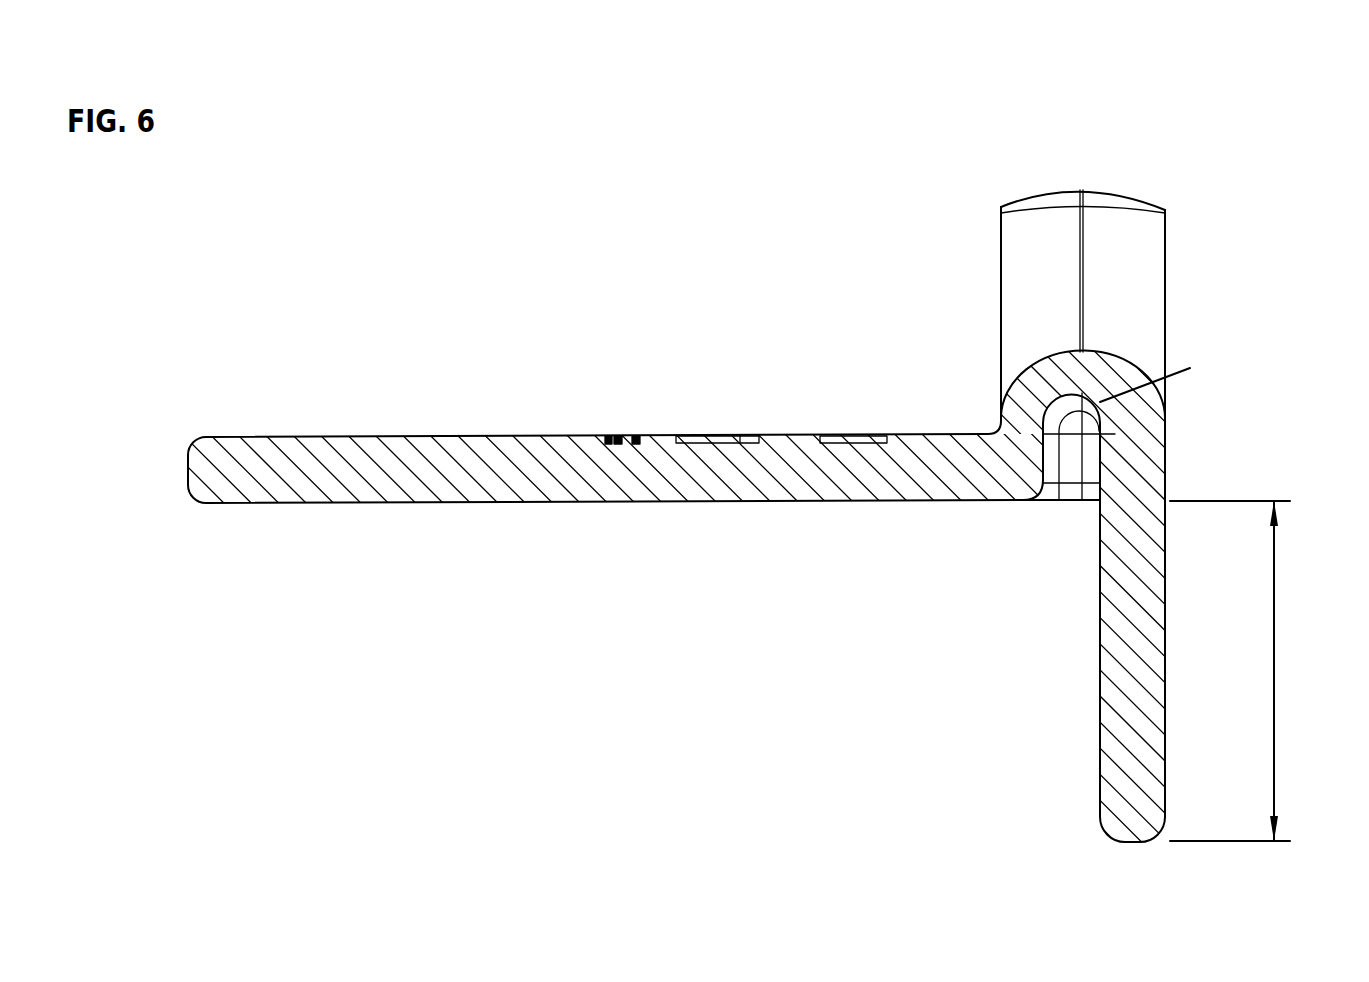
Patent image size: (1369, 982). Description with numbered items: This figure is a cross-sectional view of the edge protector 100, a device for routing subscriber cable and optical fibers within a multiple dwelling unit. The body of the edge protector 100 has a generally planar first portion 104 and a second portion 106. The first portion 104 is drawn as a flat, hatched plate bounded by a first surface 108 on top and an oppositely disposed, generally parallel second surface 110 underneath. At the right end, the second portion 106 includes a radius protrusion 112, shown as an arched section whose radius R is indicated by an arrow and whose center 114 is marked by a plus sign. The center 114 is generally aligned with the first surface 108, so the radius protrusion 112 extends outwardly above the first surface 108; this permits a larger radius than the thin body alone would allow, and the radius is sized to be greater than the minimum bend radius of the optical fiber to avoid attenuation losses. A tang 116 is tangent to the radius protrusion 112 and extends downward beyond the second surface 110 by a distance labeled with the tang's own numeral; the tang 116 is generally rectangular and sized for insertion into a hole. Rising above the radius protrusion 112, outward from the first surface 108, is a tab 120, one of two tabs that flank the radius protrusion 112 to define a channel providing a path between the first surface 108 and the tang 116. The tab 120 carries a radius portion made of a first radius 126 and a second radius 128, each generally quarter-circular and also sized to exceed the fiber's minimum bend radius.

The edge protector 100 is at (463, 288).
The first portion 104 is at (361, 385).
The second portion 106 is at (1260, 332).
The first surface 108 is at (480, 437).
The second surface 110 is at (522, 503).
The radius protrusion 112 is at (1107, 357).
The center 114 is at (1127, 367).
The tang 116 is at (1163, 635).
The tab 120 is at (1055, 188).
The first radius 126 is at (1008, 273).
The second radius 128 is at (1150, 247).